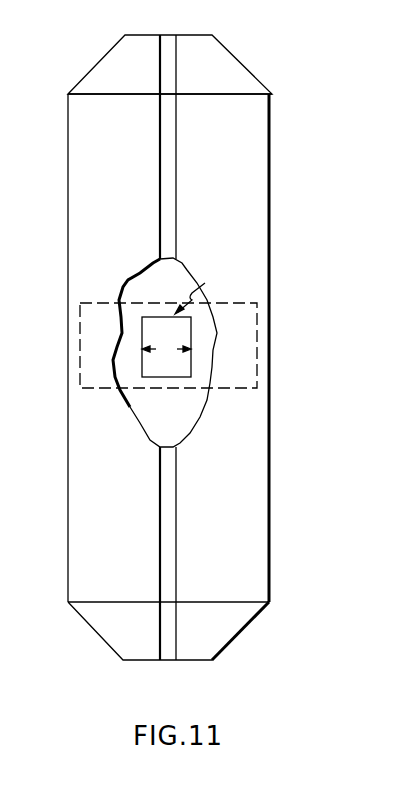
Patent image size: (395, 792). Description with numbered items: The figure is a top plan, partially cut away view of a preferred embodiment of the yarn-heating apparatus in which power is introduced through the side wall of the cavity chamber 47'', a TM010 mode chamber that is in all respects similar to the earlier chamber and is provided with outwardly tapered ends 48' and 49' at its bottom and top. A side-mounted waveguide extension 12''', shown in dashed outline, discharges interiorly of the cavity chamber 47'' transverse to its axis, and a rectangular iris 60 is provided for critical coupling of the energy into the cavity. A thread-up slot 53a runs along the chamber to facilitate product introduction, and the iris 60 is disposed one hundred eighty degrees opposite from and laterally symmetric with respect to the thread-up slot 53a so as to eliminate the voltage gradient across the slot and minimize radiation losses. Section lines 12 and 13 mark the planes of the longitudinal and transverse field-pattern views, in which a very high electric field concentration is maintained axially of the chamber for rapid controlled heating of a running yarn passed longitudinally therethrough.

The section line 12- 12 is at (183, 351).
The section line 13- 13 is at (55, 349).
The outwardly tapered end 49' is at (170, 64).
The outwardly tapered end 48' is at (174, 634).
The cavity chamber 47'' is at (188, 348).
The thread-up slot 53a is at (177, 480).
The iris 60 is at (166, 367).
The waveguide extension 12''' is at (192, 343).